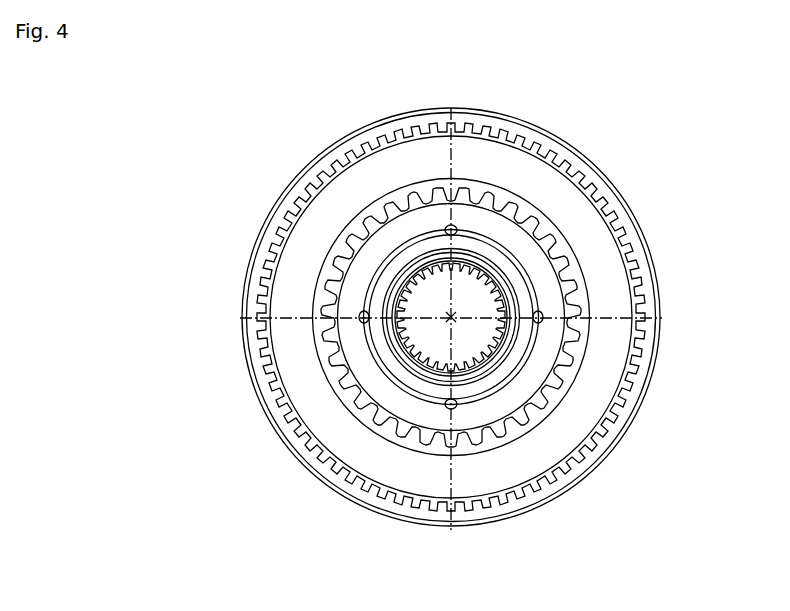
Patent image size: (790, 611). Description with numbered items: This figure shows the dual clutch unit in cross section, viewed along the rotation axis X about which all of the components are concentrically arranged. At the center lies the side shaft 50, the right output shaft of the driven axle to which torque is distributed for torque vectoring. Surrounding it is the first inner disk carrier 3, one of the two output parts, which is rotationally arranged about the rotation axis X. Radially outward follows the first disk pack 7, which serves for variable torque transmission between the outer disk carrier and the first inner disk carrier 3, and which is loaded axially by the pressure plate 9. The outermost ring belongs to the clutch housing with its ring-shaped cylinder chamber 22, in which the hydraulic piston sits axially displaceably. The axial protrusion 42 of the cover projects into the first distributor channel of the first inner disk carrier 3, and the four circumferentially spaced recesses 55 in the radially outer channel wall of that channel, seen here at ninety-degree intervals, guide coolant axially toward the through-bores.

The first inner disk carrier 3 is at (482, 443).
The first disk pack 7 is at (620, 237).
The pressure plate 9 is at (420, 156).
The cylinder chamber 22 is at (573, 155).
The axial protrusion 42 is at (512, 393).
The side shaft 50 is at (470, 337).
The recesses 55 is at (452, 229).
The rotation axis X is at (453, 316).